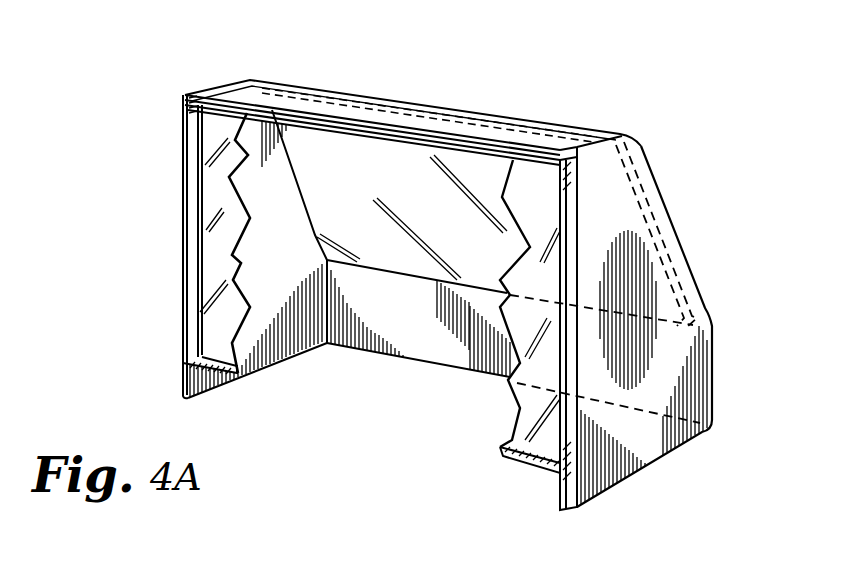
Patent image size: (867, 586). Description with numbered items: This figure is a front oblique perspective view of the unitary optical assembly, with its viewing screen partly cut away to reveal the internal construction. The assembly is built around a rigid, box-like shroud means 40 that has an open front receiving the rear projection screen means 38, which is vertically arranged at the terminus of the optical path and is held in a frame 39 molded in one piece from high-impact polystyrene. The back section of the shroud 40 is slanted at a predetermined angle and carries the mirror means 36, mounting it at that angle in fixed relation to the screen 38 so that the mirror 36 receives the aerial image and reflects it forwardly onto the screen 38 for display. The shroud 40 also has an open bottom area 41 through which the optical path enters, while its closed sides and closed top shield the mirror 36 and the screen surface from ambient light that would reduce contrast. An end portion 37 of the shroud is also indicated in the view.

The mirror means 36 is at (379, 243).
The end cap 37 is at (593, 228).
The rear projection screen means 38 is at (217, 250).
The frame 39 is at (185, 178).
The shroud means 40 is at (228, 88).
The open bottom area 41 is at (406, 418).